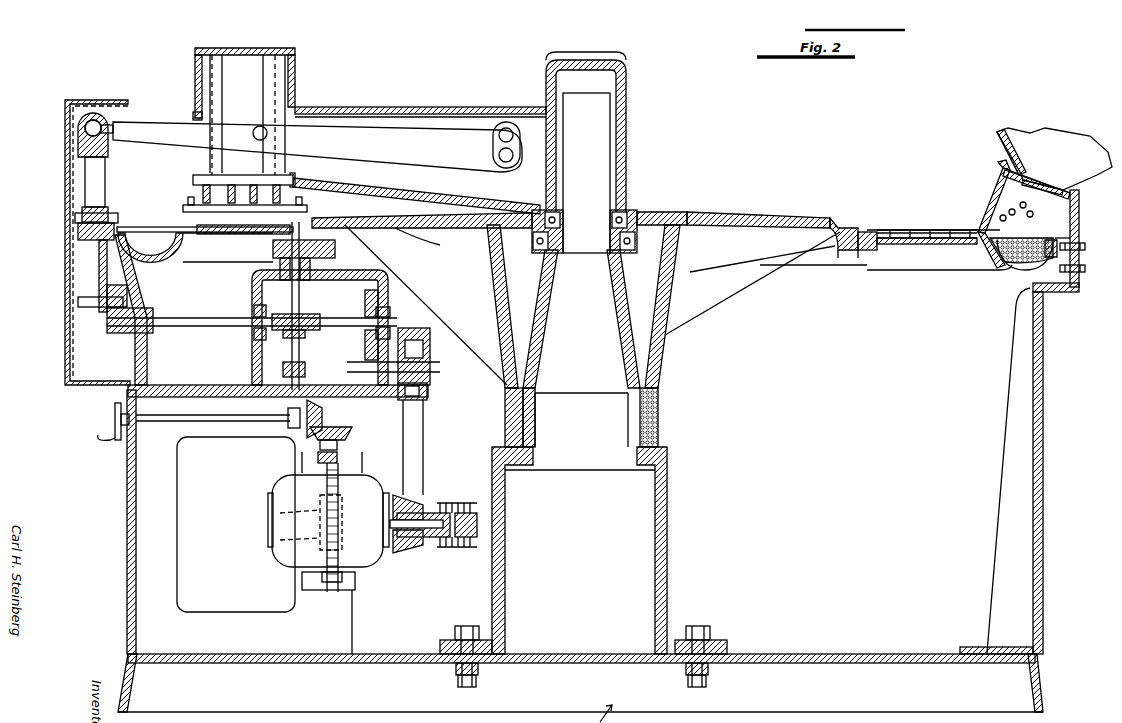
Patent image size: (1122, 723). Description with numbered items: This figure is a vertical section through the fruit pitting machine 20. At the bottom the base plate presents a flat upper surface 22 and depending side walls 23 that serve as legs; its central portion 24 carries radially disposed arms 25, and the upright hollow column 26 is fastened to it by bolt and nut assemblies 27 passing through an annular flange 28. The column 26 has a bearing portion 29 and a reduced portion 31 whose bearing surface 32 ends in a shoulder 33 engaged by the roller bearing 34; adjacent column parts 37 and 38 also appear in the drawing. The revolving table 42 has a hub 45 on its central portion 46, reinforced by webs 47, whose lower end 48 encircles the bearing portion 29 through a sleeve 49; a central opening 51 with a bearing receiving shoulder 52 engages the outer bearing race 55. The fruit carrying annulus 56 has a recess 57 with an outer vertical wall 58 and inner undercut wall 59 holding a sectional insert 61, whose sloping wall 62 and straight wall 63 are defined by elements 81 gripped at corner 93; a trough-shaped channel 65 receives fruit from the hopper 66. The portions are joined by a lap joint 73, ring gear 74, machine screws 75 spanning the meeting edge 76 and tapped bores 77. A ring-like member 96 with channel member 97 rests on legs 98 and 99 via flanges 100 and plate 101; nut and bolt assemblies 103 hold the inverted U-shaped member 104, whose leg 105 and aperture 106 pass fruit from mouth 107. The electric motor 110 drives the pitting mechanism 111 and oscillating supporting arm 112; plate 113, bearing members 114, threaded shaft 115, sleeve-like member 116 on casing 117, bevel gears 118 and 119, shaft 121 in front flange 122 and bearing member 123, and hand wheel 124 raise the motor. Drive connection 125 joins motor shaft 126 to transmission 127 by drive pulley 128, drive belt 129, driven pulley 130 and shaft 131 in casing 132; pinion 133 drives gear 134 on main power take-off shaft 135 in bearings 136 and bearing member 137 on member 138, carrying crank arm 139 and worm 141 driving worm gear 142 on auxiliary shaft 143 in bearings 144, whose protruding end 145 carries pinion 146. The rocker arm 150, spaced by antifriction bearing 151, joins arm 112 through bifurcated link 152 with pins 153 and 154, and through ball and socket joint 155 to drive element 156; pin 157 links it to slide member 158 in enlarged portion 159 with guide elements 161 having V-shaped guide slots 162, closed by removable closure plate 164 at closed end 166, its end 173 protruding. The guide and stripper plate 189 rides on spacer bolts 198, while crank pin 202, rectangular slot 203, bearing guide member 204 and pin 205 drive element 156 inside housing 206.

The machine 20 is at (642, 85).
The flat upper surface 22 is at (768, 654).
The depending side walls 23 is at (126, 660).
The central portion 24 is at (662, 600).
The radially disposed arms 25 is at (300, 663).
The upright hollow column 26 is at (677, 556).
The bolt and nut assemblies 27 is at (456, 675).
The annular flange 28 is at (440, 640).
The bearing portion 29 is at (660, 408).
The reduced portion 31 is at (628, 138).
The bearing surface 32 is at (628, 112).
The shoulder 33 is at (562, 255).
The roller bearing 34 is at (522, 306).
The tube 37 is at (630, 320).
The bearing 38 is at (626, 253).
The revolving table 42 is at (799, 211).
The hub 45 is at (690, 333).
The central portion 46 is at (735, 212).
The webs 47 is at (470, 326).
The lower end 48 is at (505, 416).
The sleeve 49 is at (523, 400).
The central opening 51 is at (655, 212).
The bearing receiving shoulder 52 is at (533, 248).
The outer bearing race 55 is at (636, 248).
The fruit carrying annulus 56 is at (868, 230).
The recess 57 is at (935, 246).
The outer vertical wall 58 is at (990, 262).
The inner undercut wall 59 is at (877, 244).
The sectional insert 61 is at (910, 222).
The sloping wall 62 is at (885, 230).
The straight wall 63 is at (990, 222).
The trough-shaped channel 65 is at (1000, 266).
The hopper 66 is at (1090, 145).
The lap joint 73 is at (850, 228).
The ring gear 74 is at (856, 260).
The machine screws 75 is at (838, 222).
The meeting edge 76 is at (350, 230).
The tapped bores 77 is at (843, 255).
The elements 81 is at (935, 230).
The corner 93 is at (868, 252).
The ring-like member 96 is at (1080, 190).
The U-shaped metal channel member 97 is at (1080, 230).
The legs 98 is at (1043, 478).
The leg 99 is at (127, 530).
The horizontally extending flanges 100 is at (1062, 292).
The plate 101 is at (212, 412).
The nut and bolt assemblies 103 is at (1085, 268).
The inverted U-shaped member 104 is at (998, 175).
The leg 105 is at (1000, 168).
The aperture 106 is at (1020, 204).
The mouth 107 is at (1020, 172).
The electric motor 110 is at (268, 524).
The pitting mechanism 111 is at (316, 124).
The oscillating supporting arm 112 is at (456, 95).
The plate 113 is at (340, 592).
The bearing members 114 is at (340, 462).
The threaded shaft 115 is at (300, 568).
The tapped sleeve-like member 116 is at (280, 510).
The casing 117 is at (275, 540).
The bevel gear 118 is at (318, 443).
The complemental bevel gear 119 is at (316, 410).
The shaft 121 is at (232, 421).
The front flange 122 is at (127, 460).
The bearing member 123 is at (294, 428).
The hand wheel 124 is at (115, 433).
The drive connection 125 is at (447, 483).
The motor shaft 126 is at (400, 553).
The power take-off and speed reduction transmission 127 is at (252, 352).
The variable speed drive pulley 128 is at (432, 548).
The drive belt 129 is at (424, 435).
The driven pulley 130 is at (437, 372).
The shaft 131 is at (432, 382).
The casing 132 is at (252, 282).
The pinion 133 is at (398, 397).
The gear 134 is at (378, 300).
The main power take-off shaft 135 is at (210, 326).
The bearings 136 is at (254, 312).
The bearing member 137 is at (150, 297).
The member 138 is at (128, 368).
The crank arm 139 is at (108, 332).
The worm 141 is at (307, 316).
The worm gear 142 is at (305, 336).
The auxiliary power take-off shaft 143 is at (292, 345).
The bearings 144 is at (305, 372).
The protruding end 145 is at (273, 250).
The pinion 146 is at (308, 280).
The rocker arm 150 is at (382, 115).
The antifriction bearing 151 is at (626, 208).
The bifurcated link 152 is at (495, 152).
The pin 153 is at (506, 128).
The pin 154 is at (506, 162).
The ball and socket joint 155 is at (100, 125).
The drive element 156 is at (78, 133).
The pin 157 is at (267, 133).
The slide member 158 is at (244, 68).
The enlarged portion 159 is at (297, 62).
The guide elements 161 is at (285, 62).
The V-shaped guide slots 162 is at (268, 90).
The removable closure plate 164 is at (190, 100).
The closed end 166 is at (196, 58).
The end 173 is at (150, 142).
The combined guide and stripper plate 189 is at (308, 210).
The spacer bolts 198 is at (186, 210).
The crank pin 202 is at (80, 307).
The rectangular slot 203 is at (90, 175).
The bearing guide member 204 is at (75, 212).
The pin 205 is at (78, 232).
The housing 206 is at (65, 385).